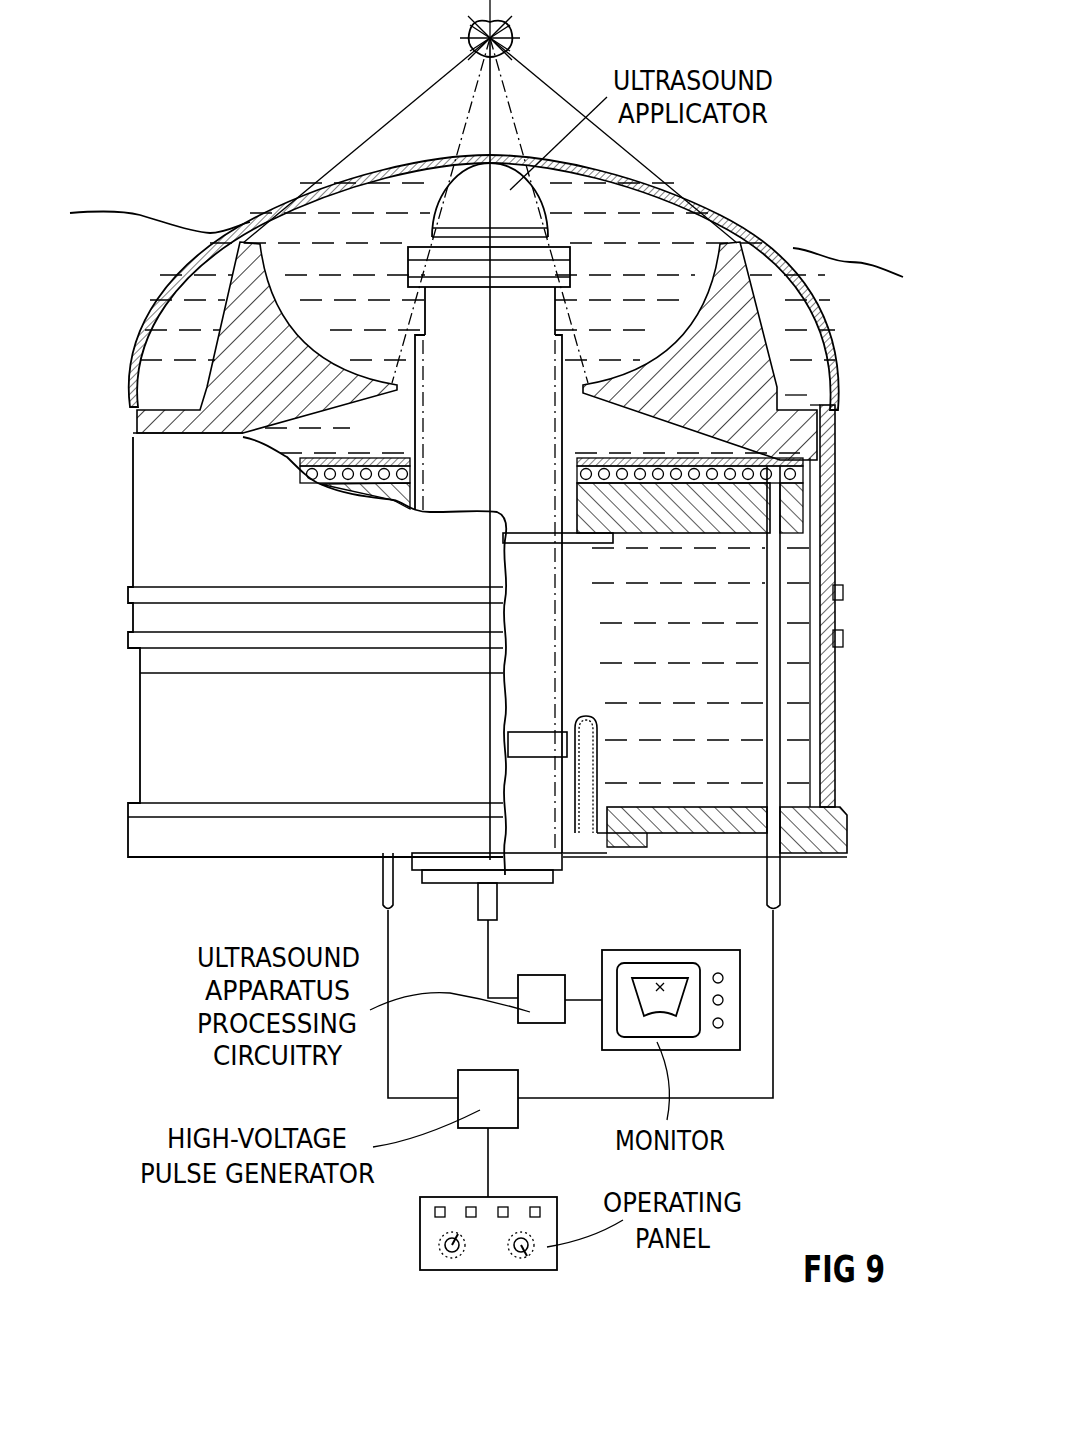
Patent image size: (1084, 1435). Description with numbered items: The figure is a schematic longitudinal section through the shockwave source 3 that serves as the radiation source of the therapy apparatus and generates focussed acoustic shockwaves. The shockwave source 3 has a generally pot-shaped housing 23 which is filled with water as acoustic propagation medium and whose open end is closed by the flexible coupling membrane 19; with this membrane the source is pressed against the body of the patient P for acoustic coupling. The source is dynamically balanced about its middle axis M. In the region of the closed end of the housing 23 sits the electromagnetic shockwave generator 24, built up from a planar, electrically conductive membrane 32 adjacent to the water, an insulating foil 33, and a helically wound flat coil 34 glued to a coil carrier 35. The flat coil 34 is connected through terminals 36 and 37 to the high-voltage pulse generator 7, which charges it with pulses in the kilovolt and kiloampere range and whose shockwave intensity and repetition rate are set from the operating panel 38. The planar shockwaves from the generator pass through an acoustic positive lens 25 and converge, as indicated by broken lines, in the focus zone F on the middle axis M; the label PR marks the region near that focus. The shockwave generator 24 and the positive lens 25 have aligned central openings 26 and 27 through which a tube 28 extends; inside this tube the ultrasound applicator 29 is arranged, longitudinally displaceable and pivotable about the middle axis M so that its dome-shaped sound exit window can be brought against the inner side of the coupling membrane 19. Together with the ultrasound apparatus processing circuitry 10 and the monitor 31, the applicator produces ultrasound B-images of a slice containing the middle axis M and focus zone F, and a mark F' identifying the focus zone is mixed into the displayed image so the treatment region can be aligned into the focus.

The focus/target region PR is at (455, 33).
The focus zone F is at (490, 121).
The central opening 26 is at (407, 383).
The patient P is at (118, 233).
The coupling membrane 19 is at (823, 280).
The acoustic positive lens 25 is at (243, 338).
The ultrasound applicator 29 is at (520, 200).
The middle axis M is at (491, 442).
The shockwave generator 24 is at (605, 456).
The membrane 32 is at (637, 462).
The insulating foil 33 is at (683, 467).
The coil carrier 35 is at (677, 533).
The flat coil 34 is at (738, 537).
The central opening 27 is at (567, 543).
The tube 28 is at (563, 640).
The housing 23 is at (835, 747).
The shockwave source 3 is at (847, 482).
The terminal 37 is at (383, 900).
The terminal 36 is at (780, 898).
The ultrasound apparatus processing circuitry 10 is at (543, 987).
The high-voltage pulse generator 7 is at (482, 1087).
The monitor 31 is at (612, 957).
The mark F' is at (662, 953).
The operating panel 38 is at (427, 1247).